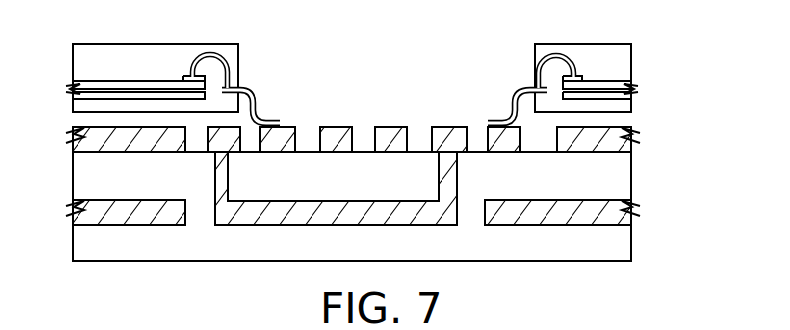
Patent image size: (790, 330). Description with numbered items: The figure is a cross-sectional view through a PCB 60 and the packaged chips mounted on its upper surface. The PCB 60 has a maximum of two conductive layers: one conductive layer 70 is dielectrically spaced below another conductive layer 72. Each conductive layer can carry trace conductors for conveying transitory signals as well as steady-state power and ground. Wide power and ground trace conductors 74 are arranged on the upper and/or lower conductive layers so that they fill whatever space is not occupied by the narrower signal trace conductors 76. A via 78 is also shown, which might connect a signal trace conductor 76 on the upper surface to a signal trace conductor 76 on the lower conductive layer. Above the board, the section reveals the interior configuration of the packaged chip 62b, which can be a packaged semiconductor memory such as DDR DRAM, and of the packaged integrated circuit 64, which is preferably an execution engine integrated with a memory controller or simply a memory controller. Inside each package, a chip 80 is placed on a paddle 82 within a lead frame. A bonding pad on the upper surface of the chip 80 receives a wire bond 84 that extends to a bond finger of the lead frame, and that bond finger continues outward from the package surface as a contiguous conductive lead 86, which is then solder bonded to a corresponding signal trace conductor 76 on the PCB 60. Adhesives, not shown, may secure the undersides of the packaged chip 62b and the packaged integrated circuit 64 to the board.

The PCB 60 is at (347, 255).
The packaged chip 62b is at (145, 43).
The packaged integrated circuit 64 is at (608, 43).
The conductive layer 70 is at (662, 215).
The conductive layer 72 is at (662, 150).
The power and ground trace conductors 74 is at (113, 152).
The signal trace conductors 76 is at (363, 109).
The via 78 is at (225, 200).
The chip 80 is at (82, 80).
The paddle 82 is at (84, 96).
The wire bond 84 is at (213, 50).
The lead 86 is at (258, 108).